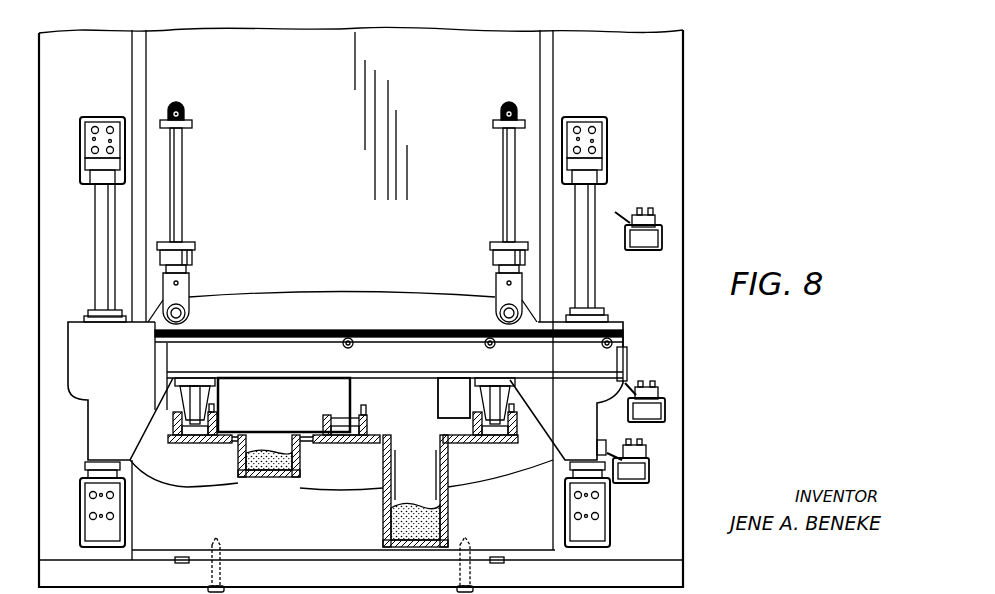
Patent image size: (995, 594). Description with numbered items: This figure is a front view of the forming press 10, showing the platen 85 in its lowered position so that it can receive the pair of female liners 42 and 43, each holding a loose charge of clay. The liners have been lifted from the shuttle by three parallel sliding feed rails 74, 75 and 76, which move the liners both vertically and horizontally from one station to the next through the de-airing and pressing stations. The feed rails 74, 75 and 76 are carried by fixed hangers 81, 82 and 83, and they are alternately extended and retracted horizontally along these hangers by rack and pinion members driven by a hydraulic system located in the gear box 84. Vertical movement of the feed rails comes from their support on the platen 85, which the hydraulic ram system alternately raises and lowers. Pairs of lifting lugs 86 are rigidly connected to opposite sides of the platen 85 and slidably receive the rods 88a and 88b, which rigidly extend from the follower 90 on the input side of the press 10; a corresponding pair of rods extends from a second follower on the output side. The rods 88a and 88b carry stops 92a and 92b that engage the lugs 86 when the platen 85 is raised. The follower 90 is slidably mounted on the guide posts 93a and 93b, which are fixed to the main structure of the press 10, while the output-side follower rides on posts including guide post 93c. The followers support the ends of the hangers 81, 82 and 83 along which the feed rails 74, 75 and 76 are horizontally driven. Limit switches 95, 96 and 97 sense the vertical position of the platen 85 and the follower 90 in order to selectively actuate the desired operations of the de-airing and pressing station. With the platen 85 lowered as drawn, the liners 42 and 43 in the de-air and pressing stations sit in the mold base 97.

The press 10 is at (632, 76).
The guide post 93a is at (90, 259).
The guide post 93b is at (600, 293).
The guide post 93c is at (191, 4).
The platen 85 is at (348, 193).
The receiver rod 88a is at (183, 184).
The receiver rod 88b is at (503, 184).
The stop 92a is at (194, 126).
The stop 92b is at (493, 126).
The lifting lug 86 is at (196, 250).
The follower 90 is at (357, 320).
The gear box 84 is at (425, 364).
The fixed hanger 83 is at (175, 440).
The feed rail 76 is at (204, 444).
The fixed hanger 81 is at (520, 432).
The feed rail 74 is at (503, 444).
The fixed hanger 82 is at (367, 418).
The feed rail 75 is at (357, 444).
The female liner 42 is at (238, 468).
The female liner 43 is at (383, 476).
The limit switch 97 is at (640, 250).
The limit switch 96 is at (645, 422).
The limit switch 95 is at (632, 483).